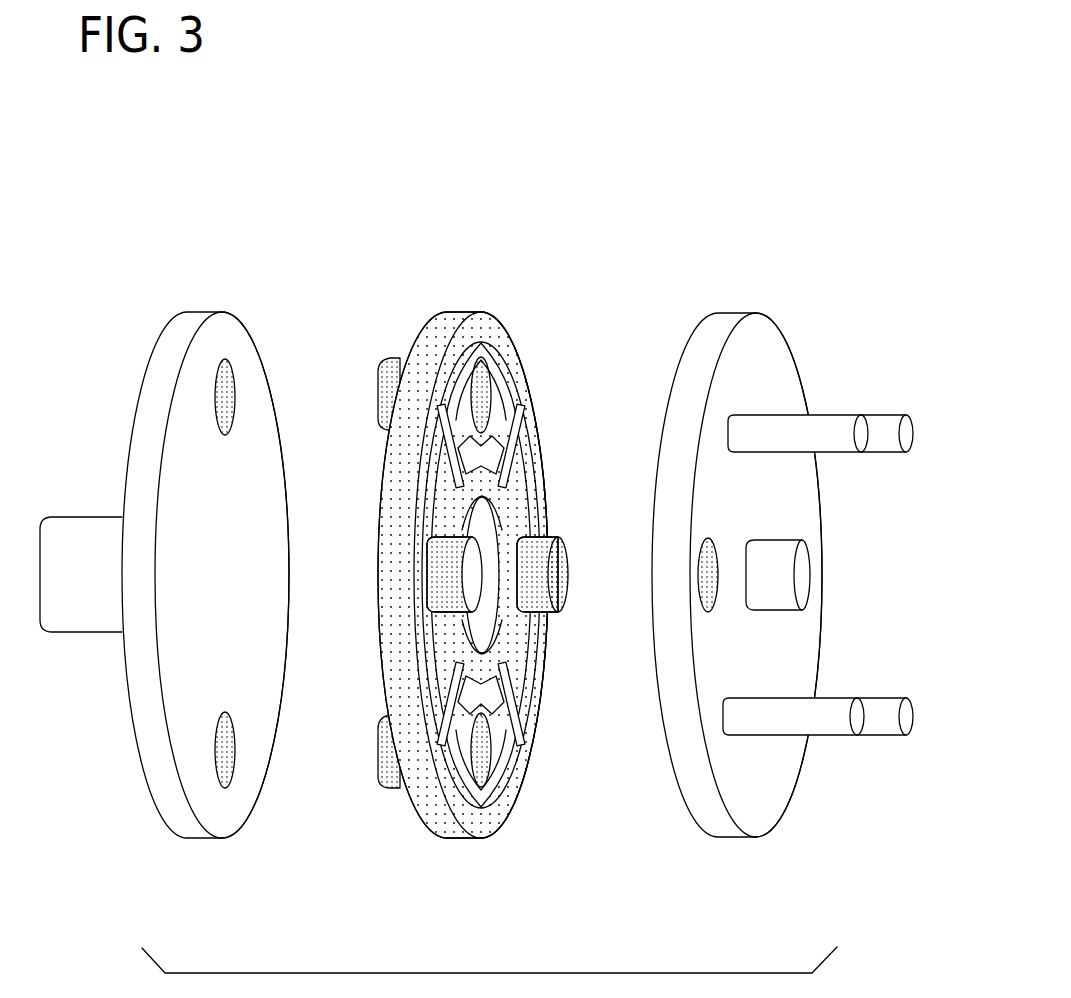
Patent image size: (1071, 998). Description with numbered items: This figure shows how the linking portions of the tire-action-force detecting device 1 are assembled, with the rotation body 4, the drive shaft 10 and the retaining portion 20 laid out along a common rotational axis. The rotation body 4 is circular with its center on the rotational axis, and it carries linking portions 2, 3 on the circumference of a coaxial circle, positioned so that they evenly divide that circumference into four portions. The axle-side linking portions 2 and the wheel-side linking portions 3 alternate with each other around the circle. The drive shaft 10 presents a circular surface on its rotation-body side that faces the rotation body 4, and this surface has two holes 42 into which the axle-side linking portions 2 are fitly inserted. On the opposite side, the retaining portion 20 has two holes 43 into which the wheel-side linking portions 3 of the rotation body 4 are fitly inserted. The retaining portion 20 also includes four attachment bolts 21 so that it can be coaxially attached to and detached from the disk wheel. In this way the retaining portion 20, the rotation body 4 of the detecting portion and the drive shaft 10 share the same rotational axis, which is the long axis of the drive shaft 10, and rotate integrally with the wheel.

The device 1 is at (483, 567).
The axle-side linking portions 2 is at (379, 373).
The wheel-side linking portions 3 is at (473, 549).
The rotation body 4 is at (449, 587).
The drive shaft 10 is at (78, 527).
The retaining portion 20 is at (785, 543).
The attachment bolts 21 is at (822, 420).
The holes 42 is at (232, 370).
The holes 43 is at (716, 546).